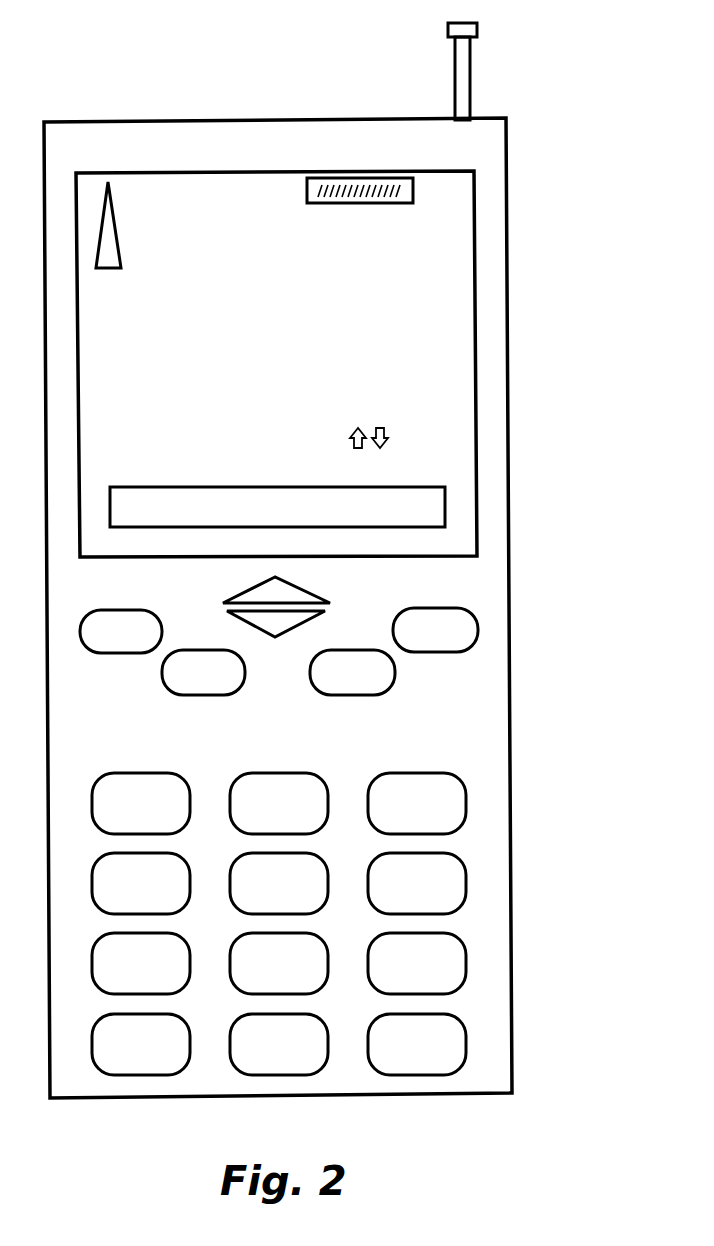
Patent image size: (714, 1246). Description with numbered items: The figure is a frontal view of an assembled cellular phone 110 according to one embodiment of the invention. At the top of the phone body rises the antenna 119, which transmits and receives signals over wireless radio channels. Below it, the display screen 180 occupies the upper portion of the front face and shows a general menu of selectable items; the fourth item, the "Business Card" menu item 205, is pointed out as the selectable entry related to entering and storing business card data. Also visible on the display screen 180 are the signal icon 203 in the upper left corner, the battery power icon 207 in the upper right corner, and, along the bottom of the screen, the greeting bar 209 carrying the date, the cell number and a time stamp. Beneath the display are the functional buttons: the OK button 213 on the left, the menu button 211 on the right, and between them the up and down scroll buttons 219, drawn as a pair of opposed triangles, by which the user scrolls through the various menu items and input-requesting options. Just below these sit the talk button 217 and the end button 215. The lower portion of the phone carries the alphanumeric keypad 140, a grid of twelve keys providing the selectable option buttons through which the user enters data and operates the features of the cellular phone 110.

The cellular phone 110 is at (97, 86).
The antenna 119 is at (471, 80).
The display screen 180 is at (170, 144).
The signal icon 203 is at (120, 225).
The battery power icon 207 is at (380, 205).
The selectable menu item "Business Card" 205 is at (166, 397).
The greeting bar 209 is at (160, 460).
The up and down scroll buttons 219 is at (299, 588).
The OK button 213 is at (118, 582).
The menu button 211 is at (445, 608).
The talk button 217 is at (204, 722).
The end button 215 is at (362, 696).
The keypad 140 is at (478, 795).